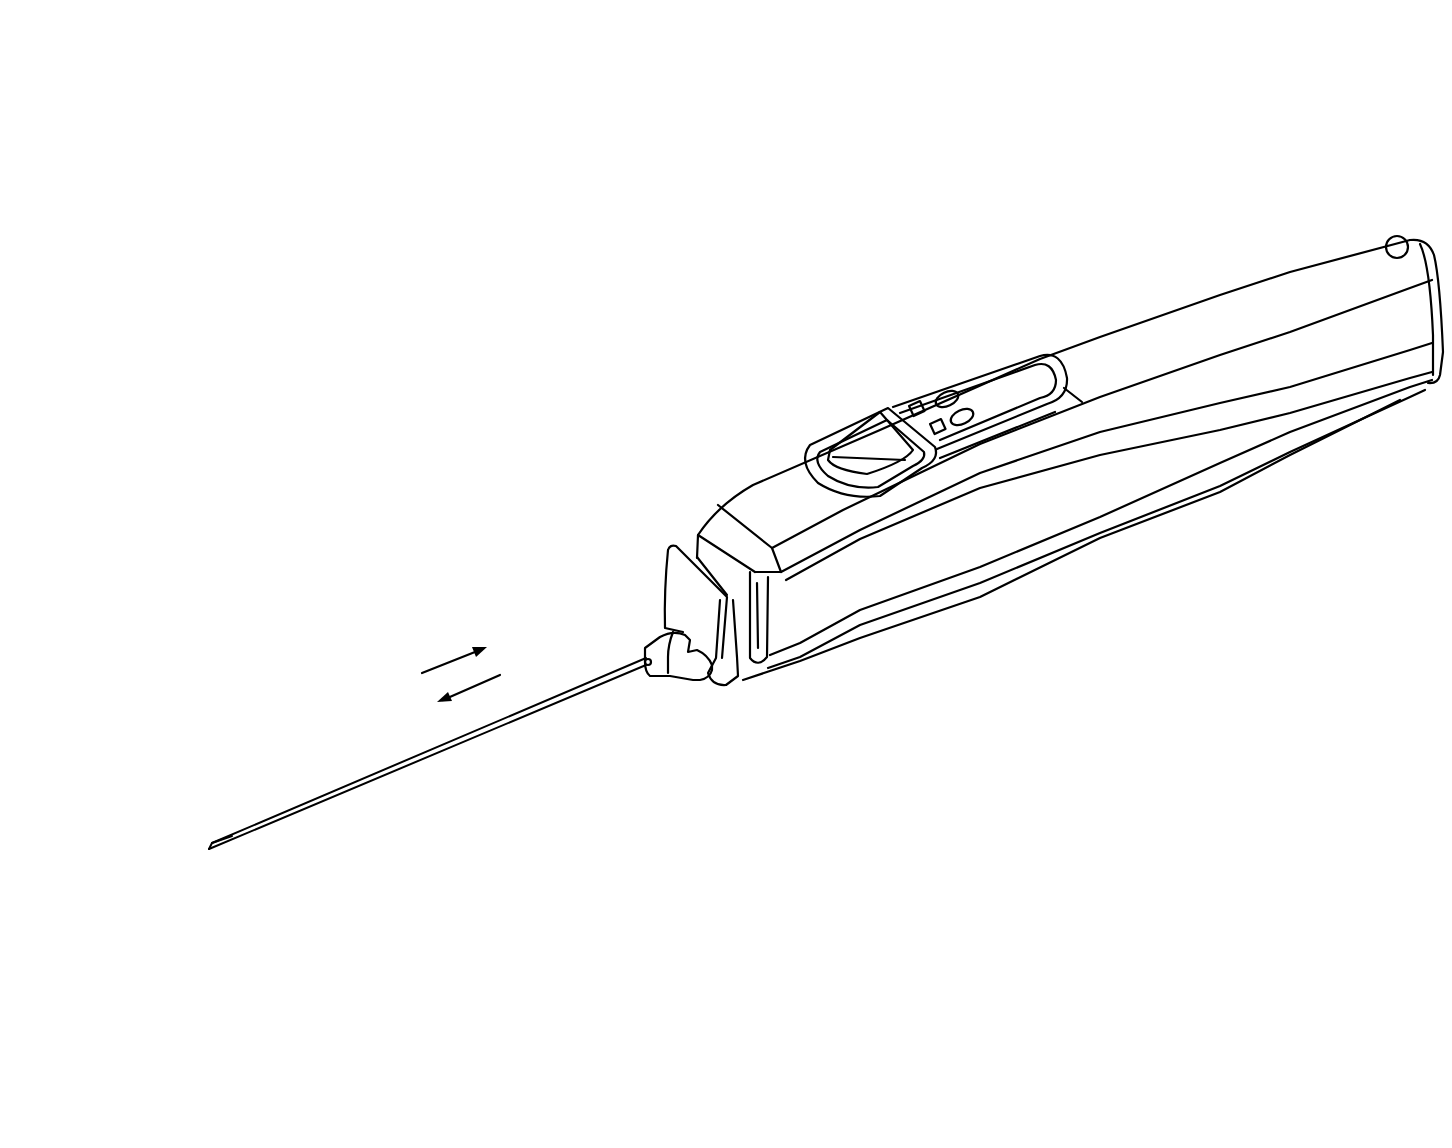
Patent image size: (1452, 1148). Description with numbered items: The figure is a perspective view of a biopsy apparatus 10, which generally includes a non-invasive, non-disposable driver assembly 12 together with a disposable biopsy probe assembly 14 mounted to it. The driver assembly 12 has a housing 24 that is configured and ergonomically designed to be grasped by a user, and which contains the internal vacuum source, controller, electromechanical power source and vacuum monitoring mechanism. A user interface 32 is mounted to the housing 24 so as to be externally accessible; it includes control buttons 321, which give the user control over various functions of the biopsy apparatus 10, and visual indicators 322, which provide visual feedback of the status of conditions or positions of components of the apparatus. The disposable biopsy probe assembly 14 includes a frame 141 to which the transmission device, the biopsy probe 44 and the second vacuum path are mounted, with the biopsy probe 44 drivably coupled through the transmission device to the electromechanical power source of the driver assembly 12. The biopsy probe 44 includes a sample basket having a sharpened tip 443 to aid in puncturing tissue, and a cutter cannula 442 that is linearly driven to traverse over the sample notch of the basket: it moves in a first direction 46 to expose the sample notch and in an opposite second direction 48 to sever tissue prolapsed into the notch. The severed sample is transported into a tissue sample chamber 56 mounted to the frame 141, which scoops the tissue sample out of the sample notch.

The biopsy apparatus 10 is at (652, 215).
The driver assembly 12 is at (1310, 238).
The disposable biopsy probe assembly 14 is at (548, 745).
The housing 24 is at (1228, 290).
The user interface 32 is at (938, 345).
The control buttons 321 is at (957, 398).
The visual indicators 322 is at (913, 403).
The biopsy probe 44 is at (200, 782).
The cutter cannula 442 is at (273, 812).
The sharpened tip 443 is at (210, 847).
The first direction 46 is at (455, 653).
The second direction 48 is at (466, 688).
The tissue sample chamber 56 is at (867, 452).
The frame 141 is at (1027, 575).